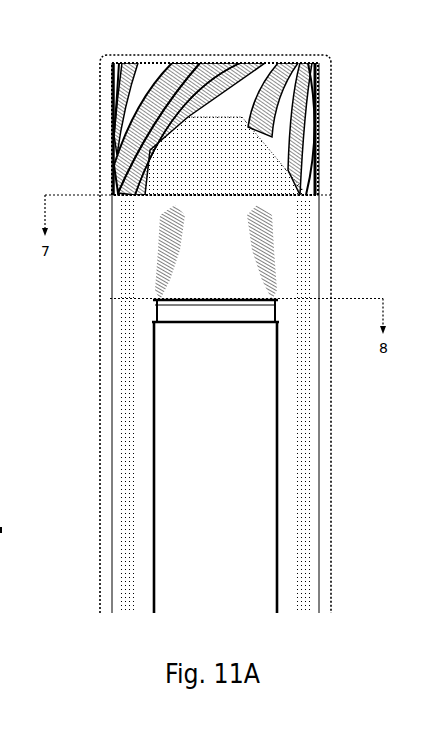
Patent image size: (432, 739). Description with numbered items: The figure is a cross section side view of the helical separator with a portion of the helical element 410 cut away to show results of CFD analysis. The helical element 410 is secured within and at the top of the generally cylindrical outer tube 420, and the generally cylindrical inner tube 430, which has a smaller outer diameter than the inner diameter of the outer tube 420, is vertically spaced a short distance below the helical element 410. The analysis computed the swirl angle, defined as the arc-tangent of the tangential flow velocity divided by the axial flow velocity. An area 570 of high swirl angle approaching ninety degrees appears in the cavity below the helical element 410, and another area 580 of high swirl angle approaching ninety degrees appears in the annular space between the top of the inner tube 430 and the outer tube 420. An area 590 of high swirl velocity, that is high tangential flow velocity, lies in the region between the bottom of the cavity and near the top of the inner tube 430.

The helical element 410 is at (116, 86).
The outer tube 420 is at (332, 487).
The inner tube 430 is at (278, 580).
The area of high swirl angle 570 is at (255, 153).
The area of high swirl angle 580 is at (127, 385).
The area of high swirl velocity 590 is at (283, 248).